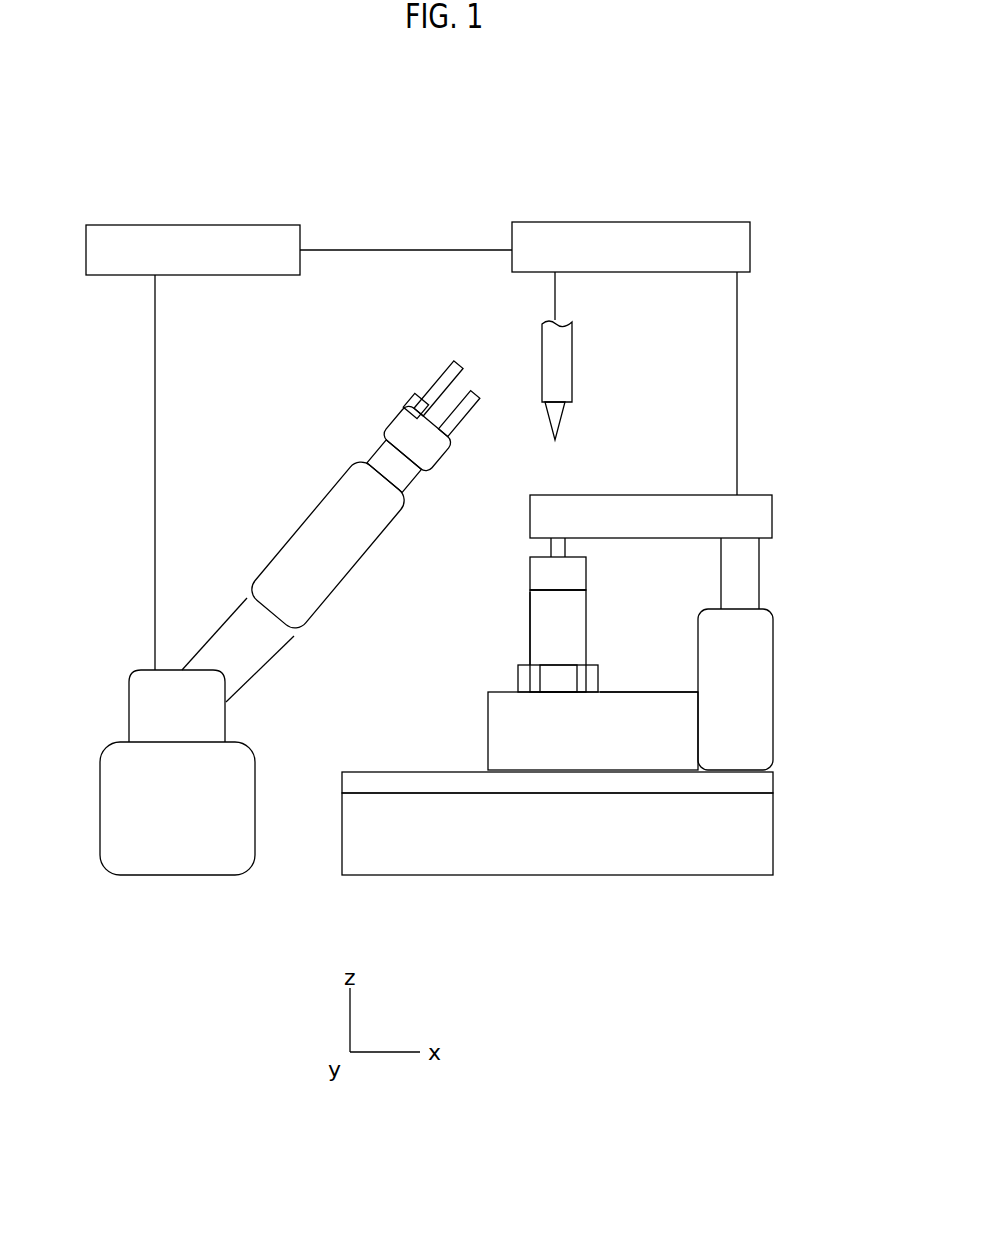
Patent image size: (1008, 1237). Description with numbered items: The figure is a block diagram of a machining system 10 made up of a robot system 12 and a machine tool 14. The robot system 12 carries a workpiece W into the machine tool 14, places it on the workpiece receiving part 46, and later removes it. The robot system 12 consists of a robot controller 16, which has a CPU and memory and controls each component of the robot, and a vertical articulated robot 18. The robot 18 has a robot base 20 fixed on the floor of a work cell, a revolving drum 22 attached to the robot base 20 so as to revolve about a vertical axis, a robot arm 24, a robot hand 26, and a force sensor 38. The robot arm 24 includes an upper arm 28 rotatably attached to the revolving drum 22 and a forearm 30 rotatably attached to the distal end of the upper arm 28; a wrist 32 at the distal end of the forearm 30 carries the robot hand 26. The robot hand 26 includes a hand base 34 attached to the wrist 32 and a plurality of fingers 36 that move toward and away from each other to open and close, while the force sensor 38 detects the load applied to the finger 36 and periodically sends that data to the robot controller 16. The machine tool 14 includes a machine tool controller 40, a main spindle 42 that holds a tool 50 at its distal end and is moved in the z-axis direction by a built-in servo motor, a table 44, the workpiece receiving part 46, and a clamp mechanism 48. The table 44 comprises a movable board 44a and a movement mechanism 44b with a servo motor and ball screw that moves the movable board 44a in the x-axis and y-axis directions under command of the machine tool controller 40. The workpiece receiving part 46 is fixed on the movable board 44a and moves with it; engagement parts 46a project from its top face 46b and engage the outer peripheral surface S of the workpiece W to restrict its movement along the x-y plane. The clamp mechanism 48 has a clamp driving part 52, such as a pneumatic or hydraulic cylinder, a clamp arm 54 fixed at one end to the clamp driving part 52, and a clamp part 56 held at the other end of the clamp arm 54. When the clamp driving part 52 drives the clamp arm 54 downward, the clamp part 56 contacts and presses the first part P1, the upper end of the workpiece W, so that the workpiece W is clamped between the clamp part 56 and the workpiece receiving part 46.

The machining system 10 is at (678, 112).
The robot system 12 is at (133, 152).
The machine tool 14 is at (757, 175).
The robot controller 16 is at (240, 225).
The robot 18 is at (265, 440).
The robot base 20 is at (178, 866).
The revolving drum 22 is at (150, 696).
The robot arm 24 is at (250, 557).
The robot hand 26 is at (416, 355).
The upper arm 28 is at (255, 656).
The forearm 30 is at (360, 565).
The wrist 32 is at (385, 457).
The hand base 34 is at (440, 452).
The fingers 36 is at (477, 393).
The force sensor 38 is at (410, 408).
The machine tool controller 40 is at (570, 222).
The main spindle 42 is at (565, 361).
The table 44 is at (583, 878).
The movable board 44a is at (765, 784).
The movement mechanism 44b is at (765, 834).
The workpiece receiving part 46 is at (500, 731).
The engagement parts 46a is at (592, 684).
The top face 46b is at (675, 691).
The clamp mechanism 48 is at (785, 490).
The tool 50 is at (560, 419).
The clamp driving part 52 is at (765, 693).
The clamp arm 54 is at (665, 505).
The clamp part 56 is at (585, 572).
The workpiece W is at (535, 641).
The outer peripheral surface S is at (530, 601).
The first part P1 is at (548, 586).